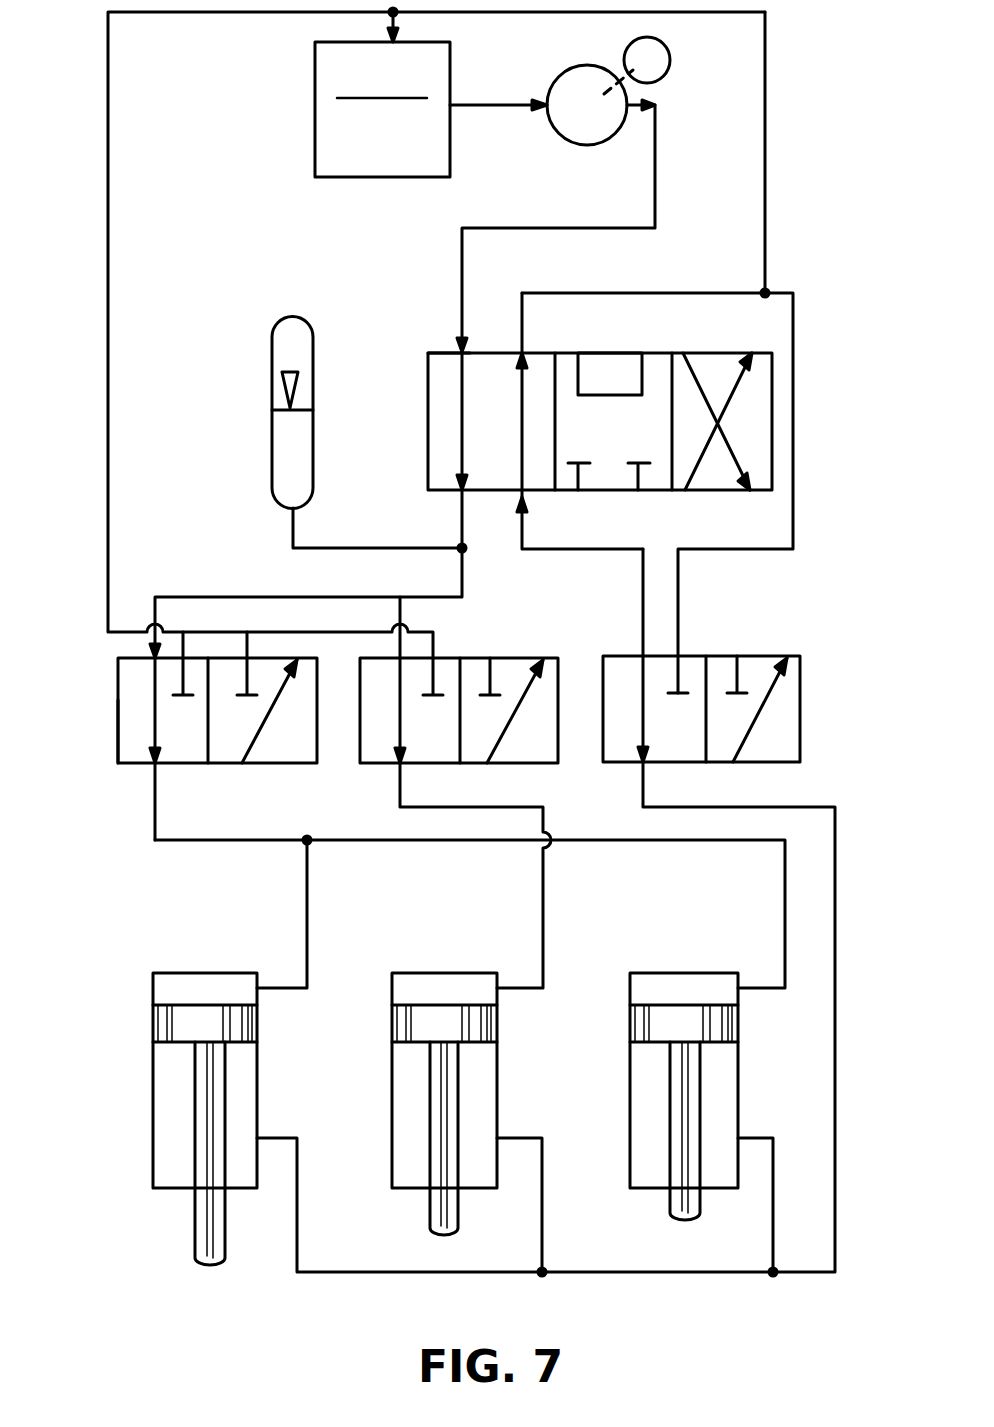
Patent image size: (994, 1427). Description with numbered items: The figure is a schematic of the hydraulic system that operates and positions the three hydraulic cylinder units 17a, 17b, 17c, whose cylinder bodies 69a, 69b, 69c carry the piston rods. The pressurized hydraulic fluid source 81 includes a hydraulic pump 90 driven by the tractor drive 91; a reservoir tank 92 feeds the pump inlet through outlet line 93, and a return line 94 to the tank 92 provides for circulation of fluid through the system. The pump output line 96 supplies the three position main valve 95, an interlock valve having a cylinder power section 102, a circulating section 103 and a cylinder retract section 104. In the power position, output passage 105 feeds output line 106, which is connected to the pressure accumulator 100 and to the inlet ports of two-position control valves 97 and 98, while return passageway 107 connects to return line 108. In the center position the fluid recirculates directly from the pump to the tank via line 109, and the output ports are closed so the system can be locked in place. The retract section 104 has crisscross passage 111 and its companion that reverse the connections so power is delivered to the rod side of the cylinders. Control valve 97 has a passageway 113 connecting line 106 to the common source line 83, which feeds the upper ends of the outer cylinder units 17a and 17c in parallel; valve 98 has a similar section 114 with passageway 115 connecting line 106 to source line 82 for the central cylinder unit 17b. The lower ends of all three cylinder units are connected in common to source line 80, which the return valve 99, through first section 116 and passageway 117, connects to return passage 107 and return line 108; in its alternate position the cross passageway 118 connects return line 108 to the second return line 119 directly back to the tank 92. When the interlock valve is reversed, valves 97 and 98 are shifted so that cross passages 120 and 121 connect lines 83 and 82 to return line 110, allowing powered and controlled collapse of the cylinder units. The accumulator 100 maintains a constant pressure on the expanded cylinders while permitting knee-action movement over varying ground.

The cylinder unit 17a is at (652, 1096).
The central cylinder unit 17b is at (405, 1104).
The cylinder unit 17c is at (158, 1119).
The cylinder body 69a is at (645, 1160).
The cylinder body 69b is at (405, 1162).
The cylinder body 69c is at (167, 1152).
The source line 80 is at (638, 1272).
The hydraulic fluid source 81 is at (386, 247).
The source line 82 is at (543, 910).
The common source line 83 is at (423, 840).
The hydraulic pump 90 is at (590, 70).
The tractor drive 91 is at (670, 62).
The hydraulic fluid reservoir tank 92 is at (368, 143).
The outlet line 93 is at (516, 100).
The return line 94 is at (393, 12).
The three position main valve 95 is at (428, 437).
The pump output line 96 is at (655, 190).
The two-position control valve 97 is at (116, 710).
The two-position control valve 98 is at (386, 770).
The return valve 99 is at (600, 737).
The pressure accumulator 100 is at (272, 445).
The cylinder power section 102 is at (430, 352).
The circulating section 103 is at (650, 352).
The cylinder retract section 104 is at (735, 358).
The output passage 105 is at (462, 378).
The output line 106 is at (460, 525).
The return passageway 107 is at (522, 413).
The return line 108 is at (765, 172).
The recirculation line 109 is at (605, 395).
The return line 110 is at (110, 495).
The crisscross passage 111 is at (703, 395).
The passageway 113 is at (160, 716).
The valve section 114 is at (362, 733).
The passageway 115 is at (400, 726).
The first section 116 is at (678, 752).
The passageway 117 is at (645, 712).
The cross passageway 118 is at (752, 733).
The second return line 119 is at (723, 549).
The cross passage 120 is at (258, 735).
The cross passage 121 is at (507, 733).